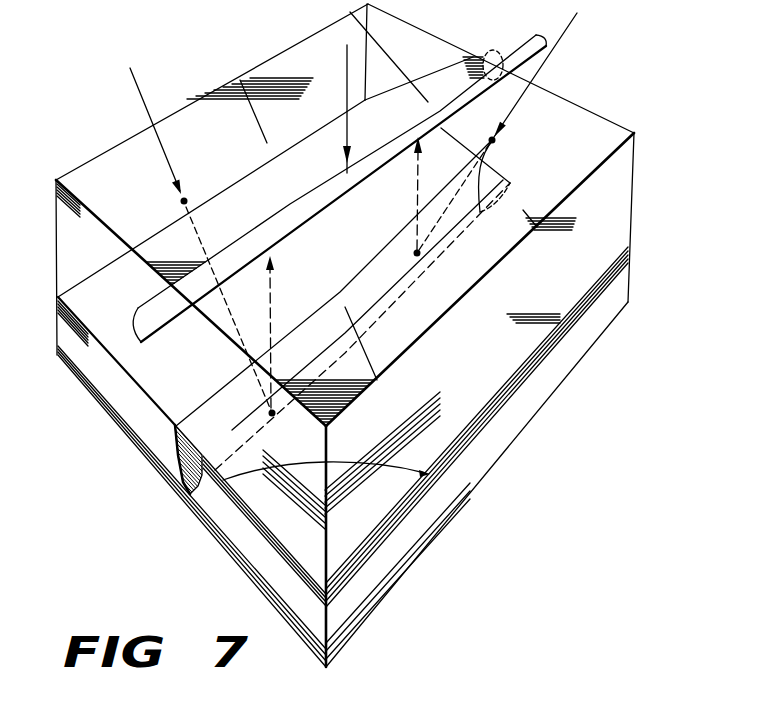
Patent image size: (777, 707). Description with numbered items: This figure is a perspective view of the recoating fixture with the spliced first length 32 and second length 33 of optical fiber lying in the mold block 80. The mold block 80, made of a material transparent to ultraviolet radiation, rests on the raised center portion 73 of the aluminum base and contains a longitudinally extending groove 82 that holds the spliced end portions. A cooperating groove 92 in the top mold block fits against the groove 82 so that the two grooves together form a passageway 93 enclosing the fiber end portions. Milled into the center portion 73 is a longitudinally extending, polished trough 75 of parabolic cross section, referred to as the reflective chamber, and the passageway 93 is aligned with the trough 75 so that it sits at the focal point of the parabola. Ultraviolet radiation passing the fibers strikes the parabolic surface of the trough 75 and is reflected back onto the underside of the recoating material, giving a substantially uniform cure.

The second length 33 is at (535, 33).
The first length 32 is at (150, 341).
The mold block 80 is at (631, 182).
The center portion 73 is at (624, 294).
The trough 75 is at (184, 481).
The groove 82 is at (488, 52).
The groove 92 is at (498, 74).
The passageway 93 is at (177, 292).